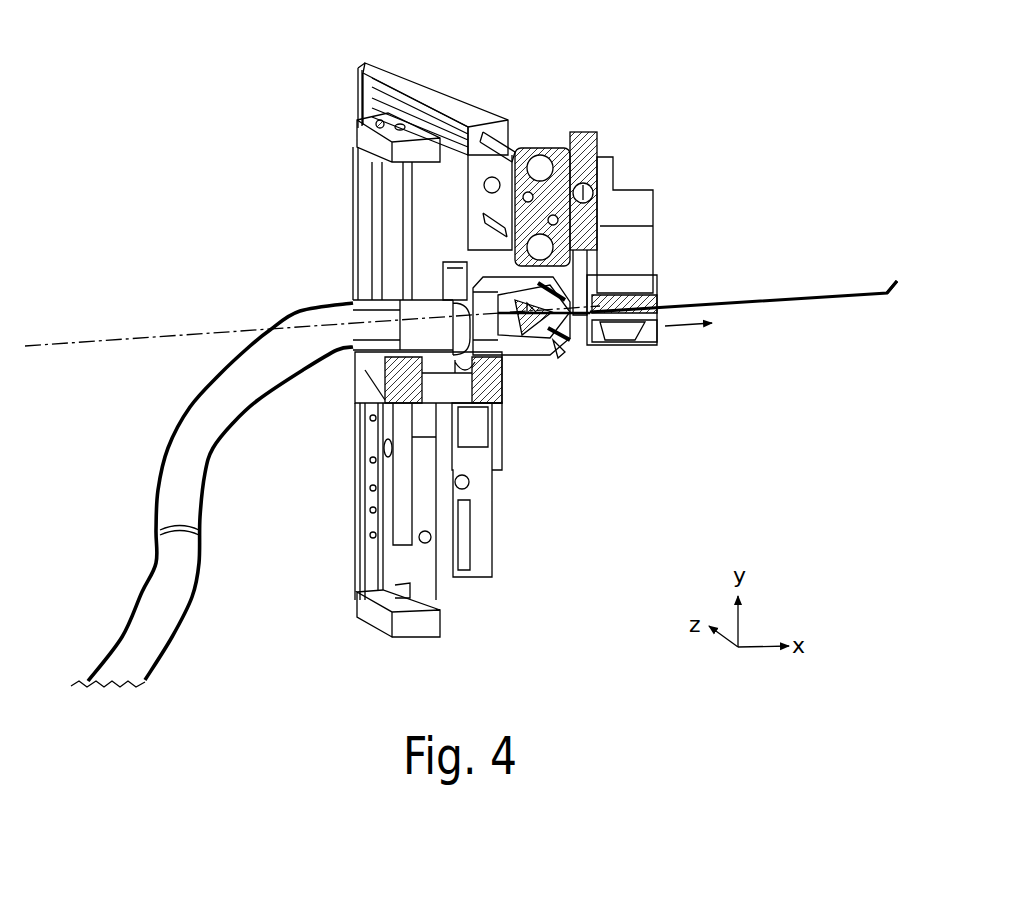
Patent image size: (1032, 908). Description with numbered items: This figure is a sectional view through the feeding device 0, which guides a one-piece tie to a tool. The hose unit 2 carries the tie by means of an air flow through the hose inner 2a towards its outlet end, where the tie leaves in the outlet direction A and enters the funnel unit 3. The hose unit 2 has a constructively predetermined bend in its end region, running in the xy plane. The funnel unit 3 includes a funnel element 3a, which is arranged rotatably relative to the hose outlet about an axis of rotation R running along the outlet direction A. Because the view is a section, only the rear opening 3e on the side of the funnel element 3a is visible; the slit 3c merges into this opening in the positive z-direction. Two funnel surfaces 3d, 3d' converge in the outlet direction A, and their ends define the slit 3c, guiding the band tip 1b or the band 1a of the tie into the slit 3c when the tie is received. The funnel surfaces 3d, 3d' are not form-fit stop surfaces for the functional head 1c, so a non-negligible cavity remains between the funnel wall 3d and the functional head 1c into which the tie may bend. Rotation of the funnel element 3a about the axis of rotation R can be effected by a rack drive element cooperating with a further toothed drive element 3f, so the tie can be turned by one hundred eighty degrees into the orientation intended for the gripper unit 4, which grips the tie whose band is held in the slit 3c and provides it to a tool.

The feeding device 0 is at (500, 350).
The band 1a is at (782, 300).
The band tip 1b is at (898, 280).
The functional head 1c is at (550, 350).
The hose unit 2 is at (212, 495).
The hose inner 2a is at (193, 571).
The funnel unit 3 is at (472, 390).
The funnel element 3a is at (507, 367).
The slit 3c is at (575, 328).
The funnel surface 3d is at (642, 223).
The funnel surface 3d' is at (592, 394).
The rear opening 3e is at (497, 288).
The further drive element 3f is at (452, 287).
The gripper unit 4 is at (607, 287).
The axis of rotation R is at (122, 338).
The outlet direction A is at (692, 335).